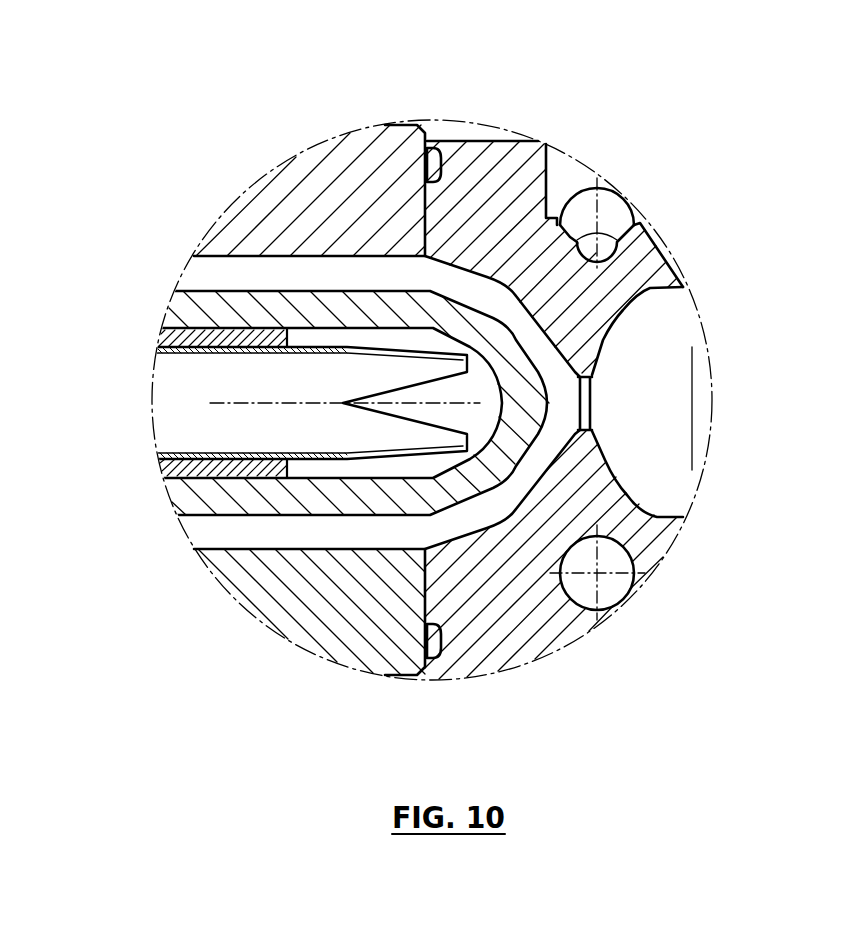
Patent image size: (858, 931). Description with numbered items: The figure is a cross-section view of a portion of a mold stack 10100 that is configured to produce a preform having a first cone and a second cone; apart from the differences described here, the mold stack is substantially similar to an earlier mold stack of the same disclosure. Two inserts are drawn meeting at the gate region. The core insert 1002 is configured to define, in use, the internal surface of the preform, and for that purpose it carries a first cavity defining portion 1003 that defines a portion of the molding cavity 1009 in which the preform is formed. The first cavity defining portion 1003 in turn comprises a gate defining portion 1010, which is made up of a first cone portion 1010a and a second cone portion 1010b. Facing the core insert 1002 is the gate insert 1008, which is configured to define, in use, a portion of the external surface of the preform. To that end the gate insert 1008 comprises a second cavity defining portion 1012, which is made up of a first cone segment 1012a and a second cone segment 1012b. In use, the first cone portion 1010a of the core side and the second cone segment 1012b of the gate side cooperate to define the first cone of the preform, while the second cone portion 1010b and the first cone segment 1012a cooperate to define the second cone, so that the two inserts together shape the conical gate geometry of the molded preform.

The nozzle assembly (detail view) 10100 is at (705, 172).
The core insert 1002 is at (192, 500).
The first cavity defining portion 1003 is at (292, 516).
The gate insert 1008 is at (520, 617).
The molding cavity 1009 is at (370, 272).
The gate defining portion 1010 is at (509, 495).
The first cone portion 1010a is at (467, 300).
The second cone portion 1010b is at (520, 347).
The second cavity defining portion 1012 is at (553, 448).
The first cone segment 1012a is at (528, 472).
The second cone segment 1012b is at (465, 537).